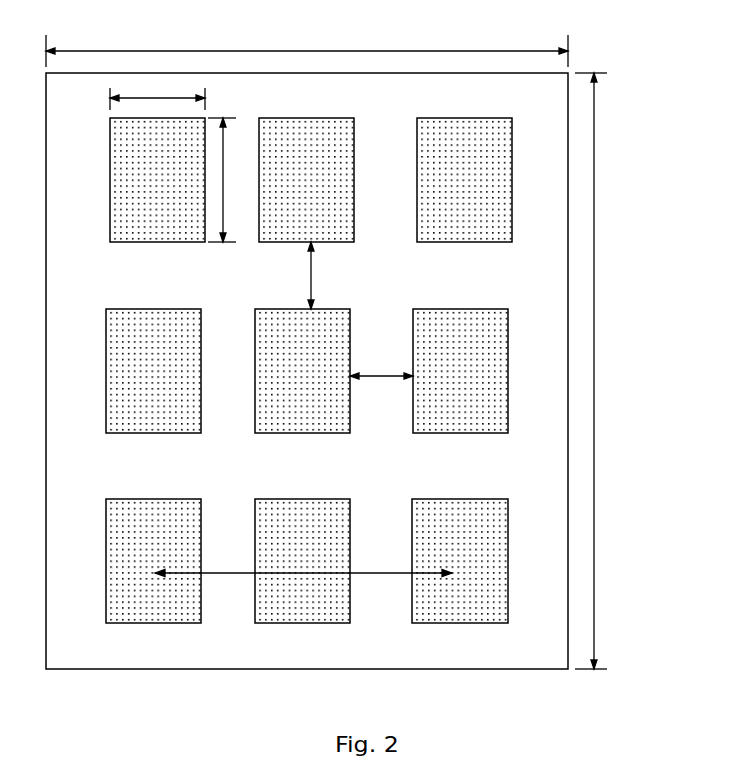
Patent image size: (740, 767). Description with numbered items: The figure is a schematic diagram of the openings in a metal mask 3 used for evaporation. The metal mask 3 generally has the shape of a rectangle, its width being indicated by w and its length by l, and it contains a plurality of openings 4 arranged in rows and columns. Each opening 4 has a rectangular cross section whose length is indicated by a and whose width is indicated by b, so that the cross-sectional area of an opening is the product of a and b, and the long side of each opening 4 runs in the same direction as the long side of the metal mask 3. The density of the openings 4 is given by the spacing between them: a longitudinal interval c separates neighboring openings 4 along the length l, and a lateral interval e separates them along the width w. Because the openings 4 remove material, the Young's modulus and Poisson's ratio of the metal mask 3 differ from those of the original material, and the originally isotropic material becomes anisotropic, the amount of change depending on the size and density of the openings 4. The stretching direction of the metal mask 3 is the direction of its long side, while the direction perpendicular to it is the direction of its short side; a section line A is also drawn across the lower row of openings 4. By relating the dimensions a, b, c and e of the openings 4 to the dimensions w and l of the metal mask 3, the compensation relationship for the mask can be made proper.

The metal mask 3 is at (351, 371).
The opening 4 is at (390, 370).
The width of the metal mask w is at (307, 41).
The length of the metal mask l is at (596, 371).
The length of the opening a is at (157, 93).
The width of the opening b is at (225, 180).
The longitudinal interval of the openings c is at (303, 275).
The lateral interval of the openings e is at (381, 359).
The section line A- A is at (305, 556).